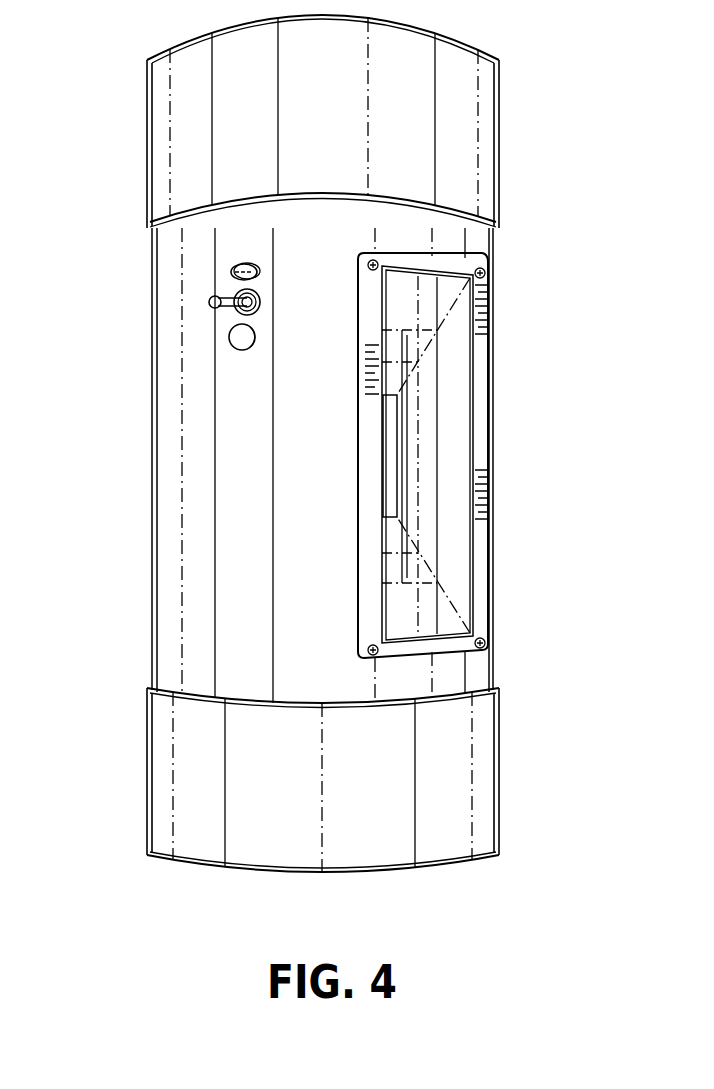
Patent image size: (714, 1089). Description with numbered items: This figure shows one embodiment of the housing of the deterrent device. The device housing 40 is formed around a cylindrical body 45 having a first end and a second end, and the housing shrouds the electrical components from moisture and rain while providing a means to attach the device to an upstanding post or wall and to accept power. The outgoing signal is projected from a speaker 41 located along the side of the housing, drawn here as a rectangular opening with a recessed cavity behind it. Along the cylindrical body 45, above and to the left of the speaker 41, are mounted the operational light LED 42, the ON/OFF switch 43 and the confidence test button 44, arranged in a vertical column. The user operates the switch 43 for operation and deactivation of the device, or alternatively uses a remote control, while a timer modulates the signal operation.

The light fixture assembly 40 is at (95, 148).
The window opening 41 is at (457, 423).
The oval button 42 is at (243, 263).
The toggle switch 43 is at (262, 300).
The push button 44 is at (258, 333).
The housing body 45 is at (178, 542).